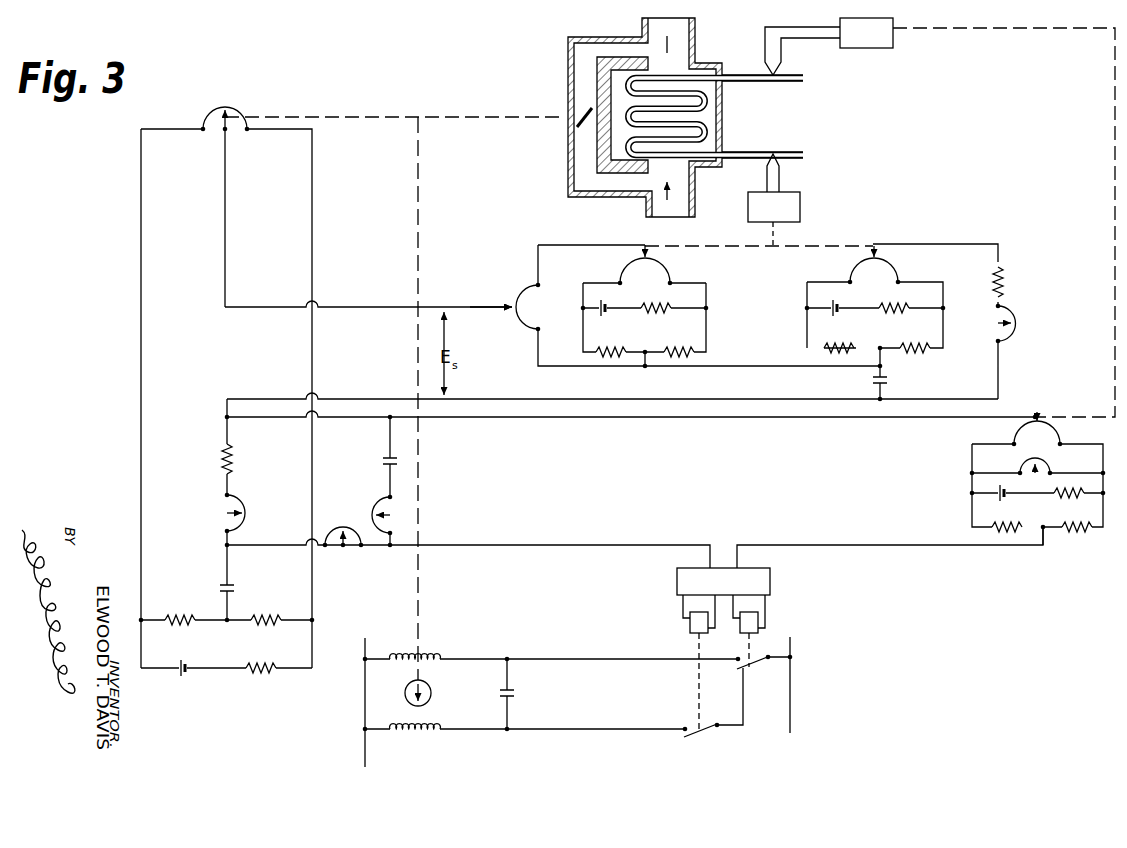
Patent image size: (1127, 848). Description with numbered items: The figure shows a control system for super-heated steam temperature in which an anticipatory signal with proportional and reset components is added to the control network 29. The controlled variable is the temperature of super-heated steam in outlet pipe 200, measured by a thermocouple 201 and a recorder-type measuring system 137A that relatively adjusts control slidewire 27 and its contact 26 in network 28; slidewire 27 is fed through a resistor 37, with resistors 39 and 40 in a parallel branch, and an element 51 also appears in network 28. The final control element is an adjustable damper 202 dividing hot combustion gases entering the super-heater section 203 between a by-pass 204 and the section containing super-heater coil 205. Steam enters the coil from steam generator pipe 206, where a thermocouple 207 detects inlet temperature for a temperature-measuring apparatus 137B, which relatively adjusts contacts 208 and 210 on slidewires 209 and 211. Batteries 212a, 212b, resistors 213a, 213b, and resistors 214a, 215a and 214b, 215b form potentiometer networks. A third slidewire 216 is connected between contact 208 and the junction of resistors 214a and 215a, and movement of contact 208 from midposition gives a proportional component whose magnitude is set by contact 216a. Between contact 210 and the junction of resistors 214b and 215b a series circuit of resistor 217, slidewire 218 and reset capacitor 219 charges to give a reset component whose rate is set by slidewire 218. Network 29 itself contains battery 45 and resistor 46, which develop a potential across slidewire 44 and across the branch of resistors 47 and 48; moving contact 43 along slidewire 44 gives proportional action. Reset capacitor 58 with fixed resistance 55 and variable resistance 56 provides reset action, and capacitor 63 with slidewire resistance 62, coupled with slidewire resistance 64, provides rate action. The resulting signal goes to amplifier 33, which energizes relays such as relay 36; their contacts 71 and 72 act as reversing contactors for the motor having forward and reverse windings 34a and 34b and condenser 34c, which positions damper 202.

The control network 29 is at (102, 320).
The contact 43 is at (219, 127).
The slidewire 44 is at (241, 113).
The battery 45 is at (186, 677).
The resistor 46 is at (258, 676).
The resistor 47 is at (183, 608).
The resistor 48 is at (268, 617).
The fixed resistance 55 is at (233, 452).
The variable resistance 56 is at (245, 505).
The reset capacitor 58 is at (240, 590).
The slidewire resistance 62 is at (343, 527).
The capacitor 63 is at (382, 460).
The slidewire resistance 64 is at (383, 503).
The contact 26 is at (1030, 418).
The control slidewire 27 is at (1058, 433).
The network 28 is at (937, 471).
The amplifier 33 is at (772, 580).
The forward winding 34a is at (430, 655).
The reverse winding 34b is at (417, 736).
The condenser 34c is at (520, 693).
The relay 36 is at (1004, 499).
The resistor 37 is at (1069, 504).
The resistor 39 is at (1083, 533).
The resistor 40 is at (1001, 533).
The meter 51 is at (1046, 467).
The relay contacts 71 is at (705, 733).
The relay contacts 72 is at (755, 666).
The measuring system 137A is at (893, 44).
The temperature-measuring apparatus 137B is at (800, 207).
The outlet pipe 200 is at (791, 82).
The thermocouple 201 is at (771, 72).
The adjustable damper 202 is at (586, 109).
The super-heater section 203 is at (550, 165).
The by-pass 204 is at (620, 181).
The super-heater coil 205 is at (702, 127).
The steam generator pipe 206 is at (791, 150).
The thermocouple 207 is at (783, 160).
The contact 208 is at (641, 253).
The slidewire 209 is at (666, 270).
The contact 210 is at (880, 249).
The slidewire 211 is at (851, 271).
The battery 212a is at (605, 313).
The battery 212b is at (836, 313).
The resistor 213a is at (657, 313).
The resistor 213b is at (892, 313).
The resistor 214a is at (617, 357).
The resistor 214b is at (845, 353).
The resistor 215a is at (685, 357).
The resistor 215b is at (916, 353).
The third slidewire 216 is at (524, 289).
The contact 216a is at (509, 309).
The resistor 217 is at (1003, 272).
The slidewire 218 is at (1015, 313).
The reset capacitor 219 is at (889, 380).